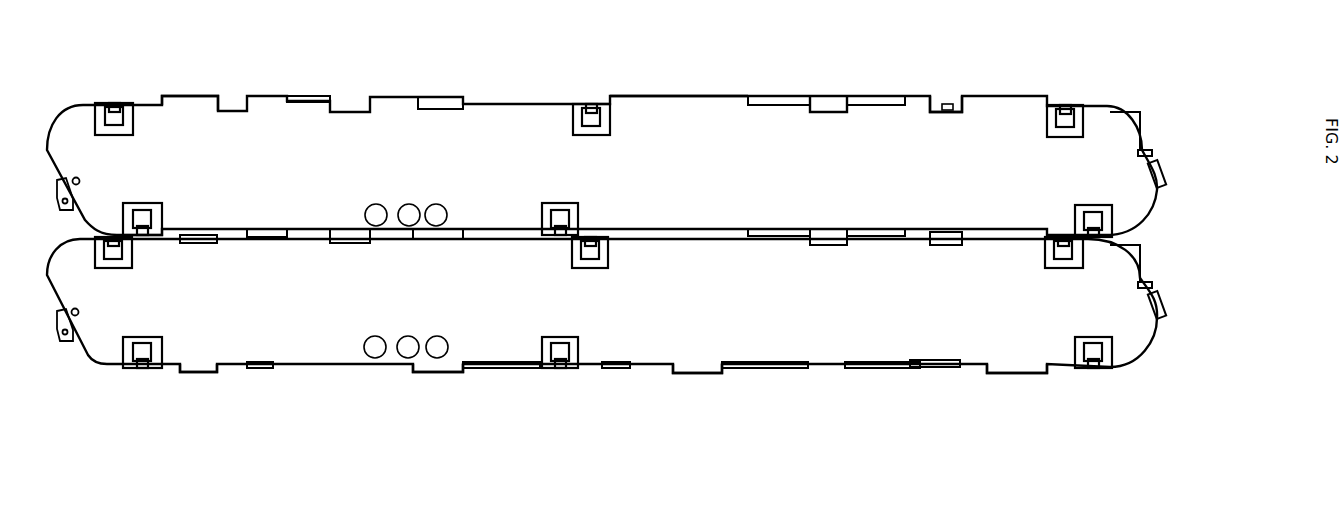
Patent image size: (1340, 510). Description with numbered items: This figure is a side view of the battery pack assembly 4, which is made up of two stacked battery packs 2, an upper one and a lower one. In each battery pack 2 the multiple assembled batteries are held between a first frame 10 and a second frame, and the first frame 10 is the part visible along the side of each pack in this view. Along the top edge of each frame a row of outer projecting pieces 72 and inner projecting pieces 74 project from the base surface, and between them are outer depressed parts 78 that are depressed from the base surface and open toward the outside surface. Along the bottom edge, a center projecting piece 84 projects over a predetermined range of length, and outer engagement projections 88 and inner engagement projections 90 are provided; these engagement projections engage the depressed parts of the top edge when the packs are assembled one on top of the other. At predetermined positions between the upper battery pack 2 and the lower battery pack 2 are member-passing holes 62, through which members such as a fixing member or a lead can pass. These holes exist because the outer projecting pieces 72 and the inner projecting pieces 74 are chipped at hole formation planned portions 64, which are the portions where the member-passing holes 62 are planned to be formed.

The battery pack 2 is at (1130, 128).
The battery pack assembly 4 is at (1207, 135).
The first frame 10 is at (982, 147).
The member-passing hole 62 is at (343, 227).
The hole formation planned portion 64 is at (832, 112).
The outer projecting piece 72 is at (386, 105).
The inner projecting piece 74 is at (440, 108).
The outer depressed part 78 is at (188, 97).
The center projecting piece 84 is at (503, 368).
The outer engagement projection 88 is at (200, 372).
The inner engagement projection 90 is at (695, 373).